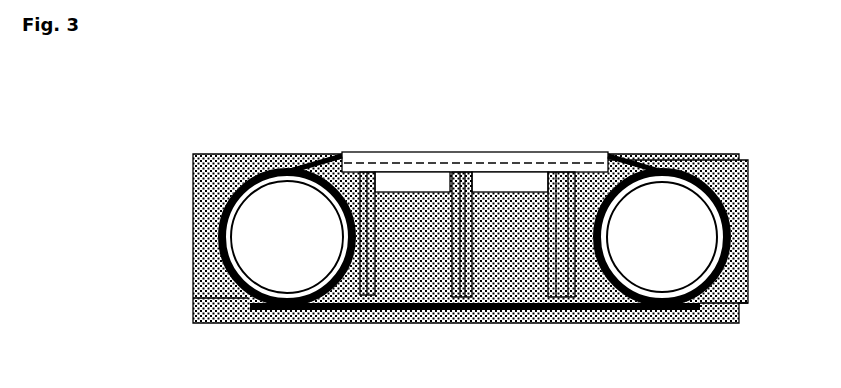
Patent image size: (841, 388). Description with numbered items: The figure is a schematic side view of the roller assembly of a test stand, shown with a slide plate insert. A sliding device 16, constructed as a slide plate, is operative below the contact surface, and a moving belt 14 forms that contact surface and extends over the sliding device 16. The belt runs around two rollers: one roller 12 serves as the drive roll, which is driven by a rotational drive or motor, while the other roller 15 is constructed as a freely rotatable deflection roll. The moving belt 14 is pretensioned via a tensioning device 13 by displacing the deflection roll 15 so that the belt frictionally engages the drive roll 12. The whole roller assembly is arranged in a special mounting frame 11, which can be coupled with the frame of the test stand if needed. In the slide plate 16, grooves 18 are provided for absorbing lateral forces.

The mounting frame 11 is at (240, 170).
The roller 12 is at (274, 177).
The tensioning device 13 is at (537, 163).
The moving belt 14 is at (633, 155).
The roller 15 is at (708, 155).
The sliding device 16 is at (430, 163).
The grooves 18 is at (476, 163).